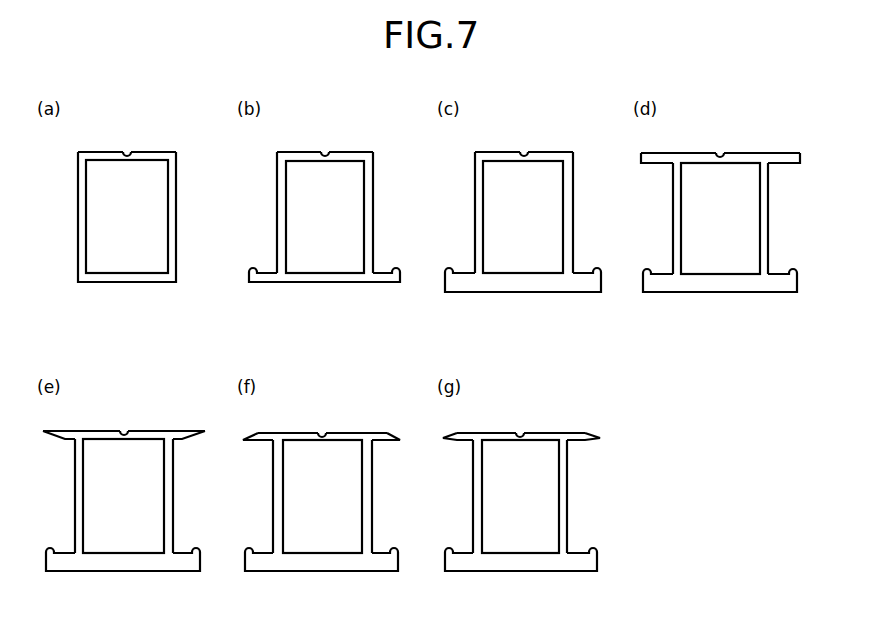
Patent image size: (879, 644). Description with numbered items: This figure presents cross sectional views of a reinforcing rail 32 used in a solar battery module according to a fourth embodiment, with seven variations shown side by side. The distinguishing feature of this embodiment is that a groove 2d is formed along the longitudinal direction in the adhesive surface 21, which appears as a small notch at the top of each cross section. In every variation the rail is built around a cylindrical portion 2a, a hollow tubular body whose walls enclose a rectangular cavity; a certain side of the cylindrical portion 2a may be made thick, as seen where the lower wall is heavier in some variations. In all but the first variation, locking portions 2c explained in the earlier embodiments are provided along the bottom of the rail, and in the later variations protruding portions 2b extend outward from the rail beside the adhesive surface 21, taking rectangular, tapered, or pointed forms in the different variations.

The reinforcing rail 32 is at (428, 352).
The adhesive surface 21 is at (495, 433).
The cylindrical portion 2a is at (591, 531).
The protruding portion 2b is at (581, 441).
The locking portion 2c is at (589, 572).
The groove 2d is at (519, 432).